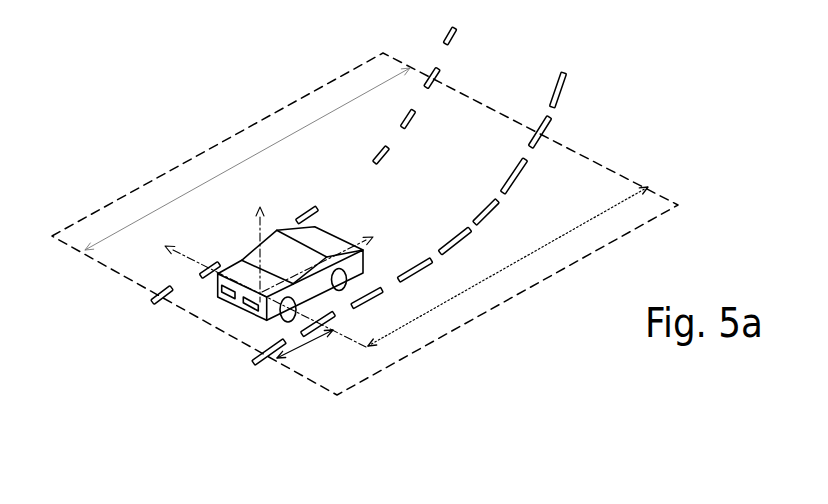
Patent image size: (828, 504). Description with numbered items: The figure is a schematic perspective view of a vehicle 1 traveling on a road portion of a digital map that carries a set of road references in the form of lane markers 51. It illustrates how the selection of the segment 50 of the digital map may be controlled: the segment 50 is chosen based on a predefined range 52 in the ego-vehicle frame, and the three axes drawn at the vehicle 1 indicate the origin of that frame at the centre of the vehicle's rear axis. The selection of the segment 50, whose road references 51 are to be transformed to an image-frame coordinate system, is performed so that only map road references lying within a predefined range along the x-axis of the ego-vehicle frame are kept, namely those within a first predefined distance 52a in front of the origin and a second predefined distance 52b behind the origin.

The vehicle 1 is at (352, 238).
The segment 50 is at (278, 108).
The lane markers 51 is at (310, 206).
The predefined range 52 is at (198, 187).
The first predefined distance 52a is at (497, 273).
The second predefined distance 52b is at (312, 348).